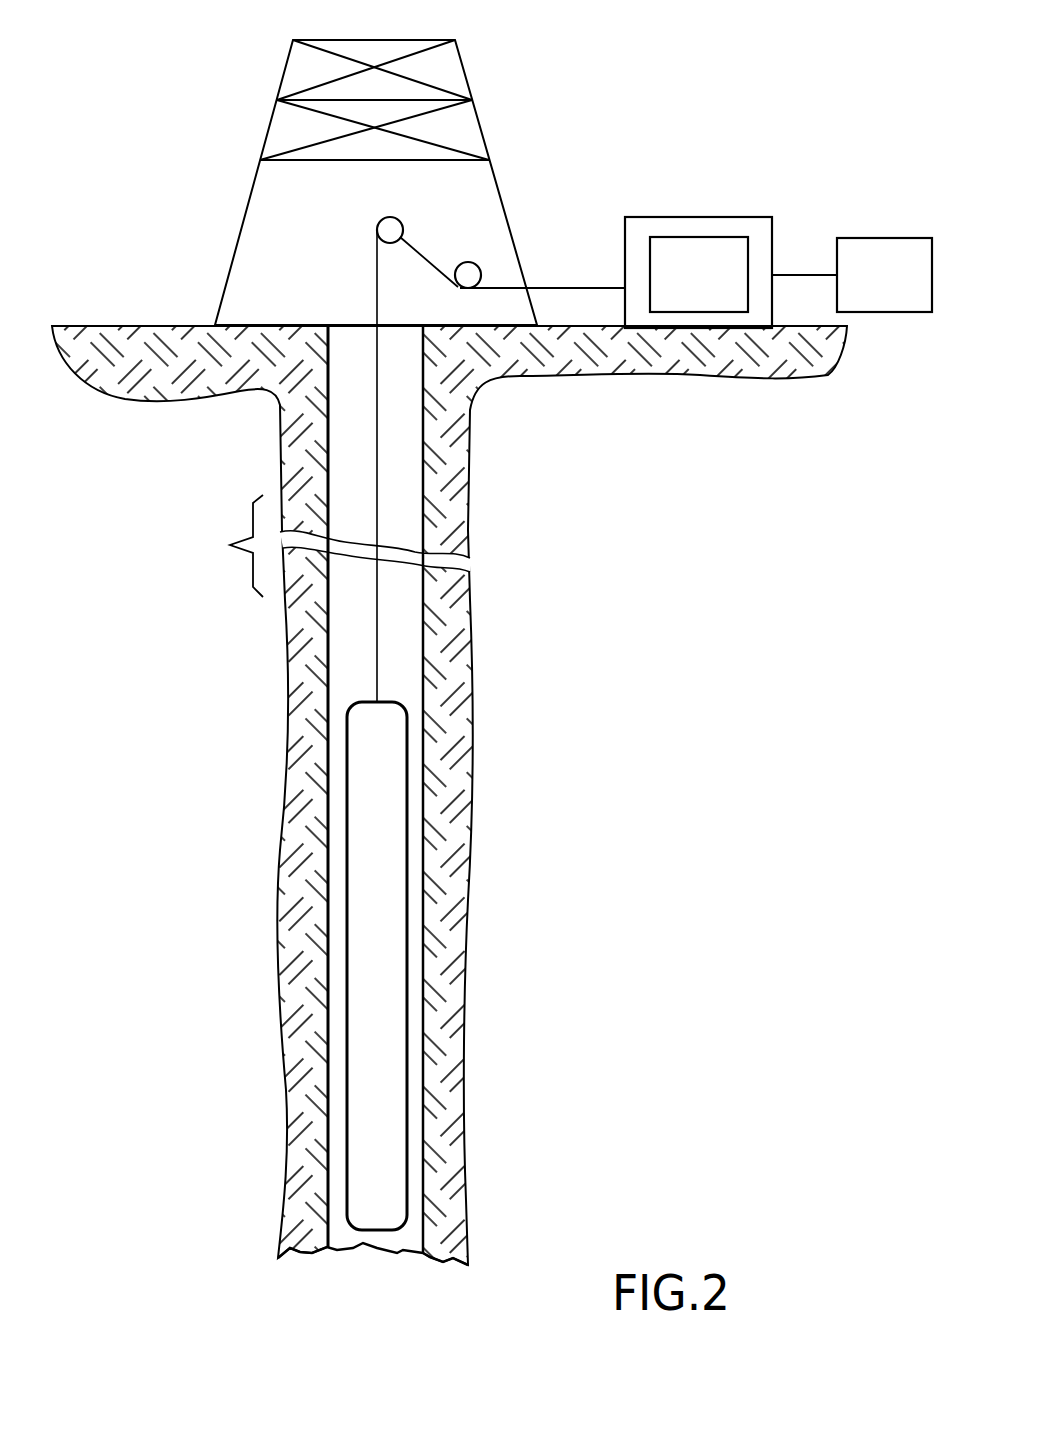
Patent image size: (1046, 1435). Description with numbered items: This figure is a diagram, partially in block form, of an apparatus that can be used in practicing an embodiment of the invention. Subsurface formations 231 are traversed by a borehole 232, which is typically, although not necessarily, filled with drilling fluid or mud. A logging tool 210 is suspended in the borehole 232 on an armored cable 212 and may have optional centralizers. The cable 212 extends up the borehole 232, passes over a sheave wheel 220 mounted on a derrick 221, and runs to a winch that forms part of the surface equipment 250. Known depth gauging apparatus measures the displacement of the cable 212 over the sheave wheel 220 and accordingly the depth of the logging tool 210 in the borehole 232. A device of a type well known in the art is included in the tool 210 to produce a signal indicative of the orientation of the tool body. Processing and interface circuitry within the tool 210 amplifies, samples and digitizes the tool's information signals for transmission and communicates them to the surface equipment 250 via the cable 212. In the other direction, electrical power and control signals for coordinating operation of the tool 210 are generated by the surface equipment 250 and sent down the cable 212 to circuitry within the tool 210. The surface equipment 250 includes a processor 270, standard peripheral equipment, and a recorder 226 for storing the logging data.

The logging tool 210 is at (380, 1148).
The armored cable 212 is at (377, 487).
The sheave wheel 220 is at (388, 228).
The derrick 221 is at (467, 63).
The recorder 226 is at (895, 237).
The subsurface formations 231 is at (302, 1100).
The borehole 232 is at (346, 675).
The surface equipment 250 is at (620, 244).
The processor 270 is at (695, 250).